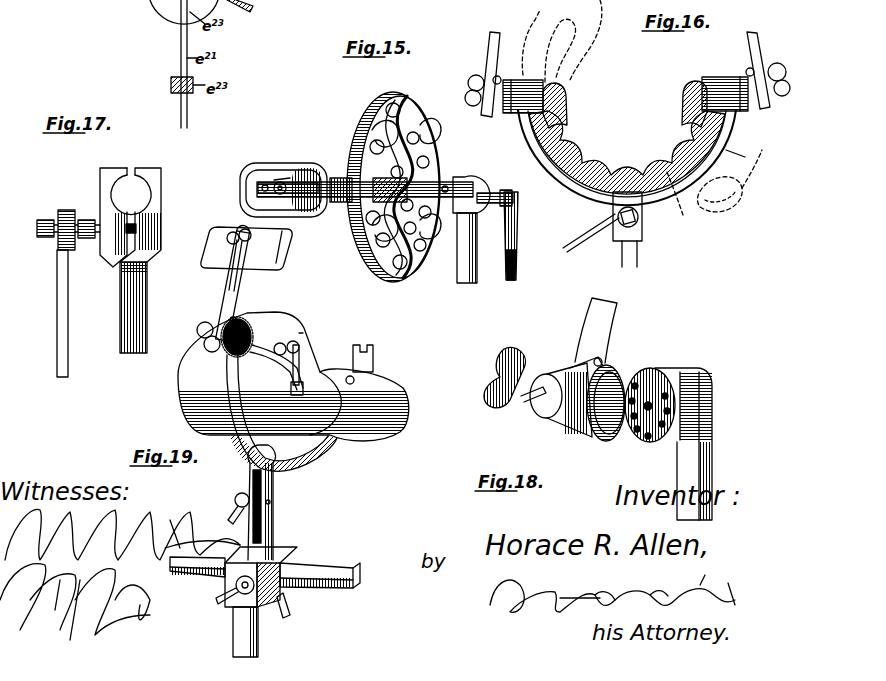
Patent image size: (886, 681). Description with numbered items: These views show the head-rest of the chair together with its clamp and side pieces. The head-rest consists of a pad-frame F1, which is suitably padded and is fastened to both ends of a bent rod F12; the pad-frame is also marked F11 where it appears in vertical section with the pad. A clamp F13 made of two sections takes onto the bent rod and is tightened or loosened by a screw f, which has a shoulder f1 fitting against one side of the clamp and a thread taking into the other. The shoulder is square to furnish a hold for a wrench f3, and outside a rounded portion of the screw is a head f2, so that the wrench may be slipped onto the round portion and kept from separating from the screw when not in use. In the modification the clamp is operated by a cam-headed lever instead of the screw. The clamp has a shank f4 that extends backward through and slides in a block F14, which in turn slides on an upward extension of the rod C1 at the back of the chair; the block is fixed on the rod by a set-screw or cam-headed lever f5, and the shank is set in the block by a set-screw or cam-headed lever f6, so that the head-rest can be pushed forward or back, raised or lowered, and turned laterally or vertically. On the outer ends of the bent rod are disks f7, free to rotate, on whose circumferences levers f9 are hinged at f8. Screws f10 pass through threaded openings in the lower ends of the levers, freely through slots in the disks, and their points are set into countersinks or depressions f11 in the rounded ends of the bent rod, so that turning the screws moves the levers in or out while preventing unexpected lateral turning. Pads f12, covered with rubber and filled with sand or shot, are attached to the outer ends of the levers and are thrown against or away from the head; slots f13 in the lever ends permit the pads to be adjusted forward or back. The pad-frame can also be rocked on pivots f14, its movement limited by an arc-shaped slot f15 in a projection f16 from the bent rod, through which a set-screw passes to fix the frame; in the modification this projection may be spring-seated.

In FIG. 17, the screw f is at (137, 228).
In FIG. 15, the screw f is at (447, 205).
In FIG. 17, the shoulder f1 is at (87, 238).
In FIG. 15, the shoulder f1 is at (498, 209).
In FIG. 17, the head f2 is at (40, 233).
In FIG. 15, the head f2 is at (518, 200).
In FIG. 16, the head f2 is at (643, 230).
In FIG. 17, the wrench f3 is at (62, 315).
In FIG. 15, the wrench f3 is at (517, 275).
In FIG. 16, the wrench f3 is at (590, 250).
In FIG. 17, the shank f4 is at (135, 345).
In FIG. 15, the shank f4 is at (460, 282).
In FIG. 16, the shank f4 is at (630, 265).
In FIG. 19, the shank f4 is at (258, 630).
In FIG. 19, the set-screw or cam-headed lever f5 is at (288, 616).
In FIG. 19, the set-screw or cam-headed lever f6 is at (221, 593).
In FIG. 16, the disks f7 is at (512, 80).
In FIG. 19, the disks f7 is at (228, 348).
In FIG. 18, the disks f7 is at (616, 366).
In FIG. 16, the hinge points f8 is at (607, 65).
In FIG. 19, the hinge points f8 is at (236, 318).
In FIG. 18, the hinge points f8 is at (590, 362).
In FIG. 15, the levers f9 is at (338, 178).
In FIG. 16, the levers f9 is at (490, 45).
In FIG. 19, the levers f9 is at (225, 298).
In FIG. 18, the levers f9 is at (595, 310).
In FIG. 16, the screws f10 is at (473, 106).
In FIG. 19, the screws f10 is at (197, 336).
In FIG. 18, the screws f10 is at (485, 408).
In FIG. 18, the countersinks or depressions f11 is at (650, 443).
In FIG. 15, the pads f12 is at (245, 180).
In FIG. 19, the pads f12 is at (275, 248).
In FIG. 15, the slots f13 is at (322, 205).
In FIG. 19, the slots f13 is at (237, 280).
In FIG. 19, the pivots f14 is at (348, 377).
In FIG. 19, the arc-shaped slot f15 is at (299, 345).
In FIG. 19, the projection f16 is at (282, 340).
In FIG. 15, the pad-frame F1 is at (325, 126).
In FIG. 16, the pad-frame F1 is at (557, 150).
In FIG. 19, the pad-frame F1 is at (392, 394).
In FIG. 16, the shoe outline (F double prime) F11 is at (670, 132).
In FIG. 15, the bent rod F12 is at (462, 176).
In FIG. 16, the bent rod F12 is at (740, 157).
In FIG. 19, the bent rod F12 is at (318, 452).
In FIG. 18, the bent rod F12 is at (696, 463).
In FIG. 17, the clamp F13 is at (80, 183).
In FIG. 19, the clamp F13 is at (275, 493).
In FIG. 19, the block F14 is at (275, 592).
In FIG. 19, the rod C1 is at (352, 567).